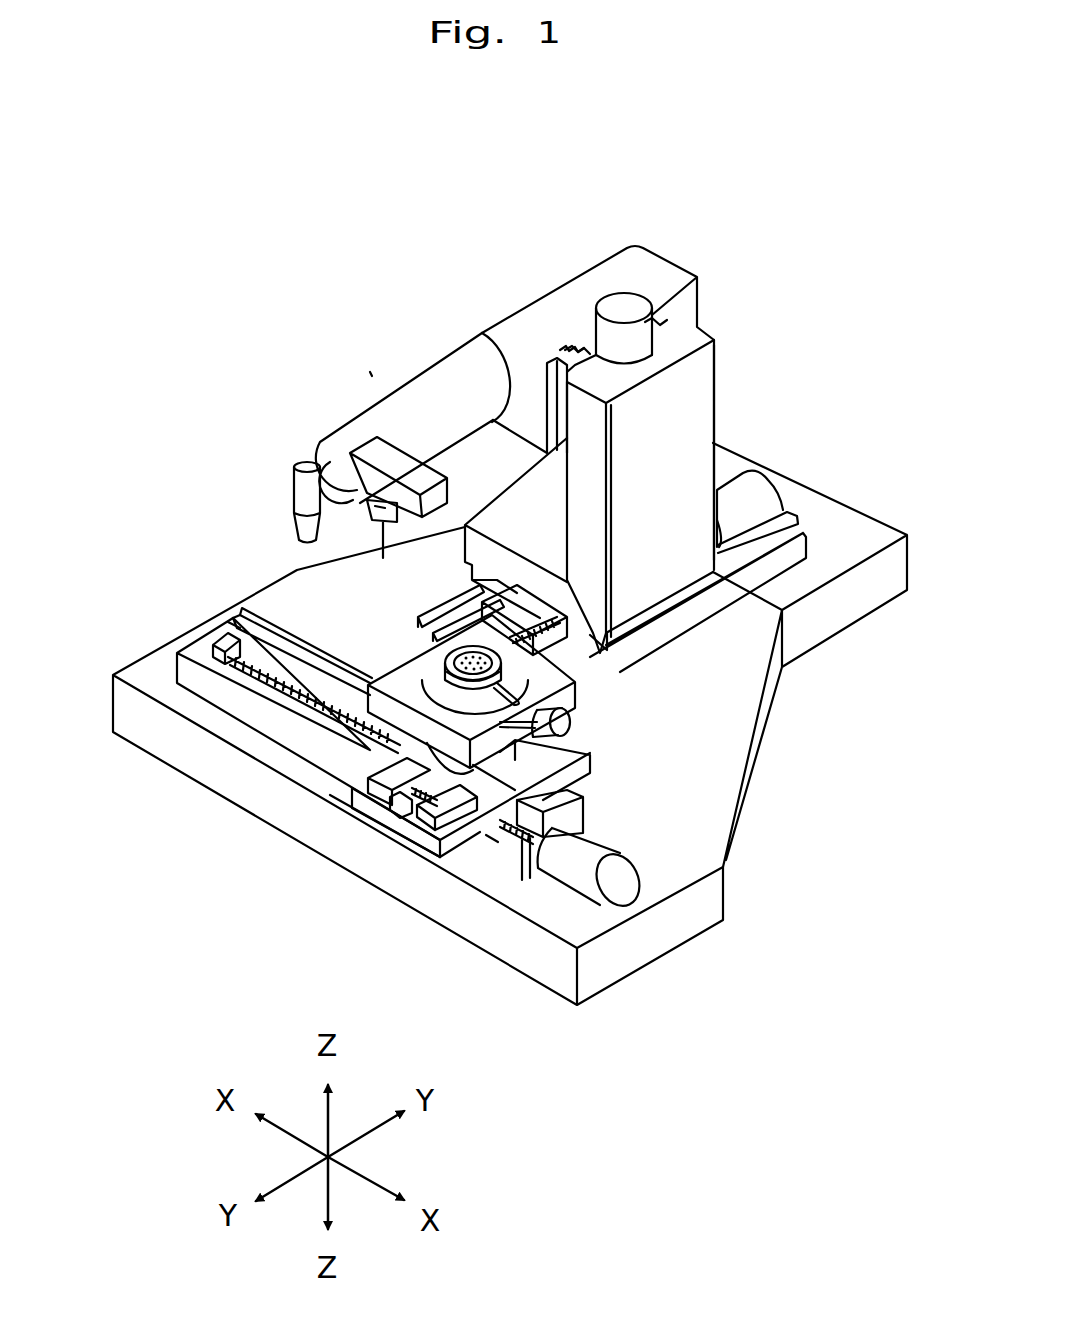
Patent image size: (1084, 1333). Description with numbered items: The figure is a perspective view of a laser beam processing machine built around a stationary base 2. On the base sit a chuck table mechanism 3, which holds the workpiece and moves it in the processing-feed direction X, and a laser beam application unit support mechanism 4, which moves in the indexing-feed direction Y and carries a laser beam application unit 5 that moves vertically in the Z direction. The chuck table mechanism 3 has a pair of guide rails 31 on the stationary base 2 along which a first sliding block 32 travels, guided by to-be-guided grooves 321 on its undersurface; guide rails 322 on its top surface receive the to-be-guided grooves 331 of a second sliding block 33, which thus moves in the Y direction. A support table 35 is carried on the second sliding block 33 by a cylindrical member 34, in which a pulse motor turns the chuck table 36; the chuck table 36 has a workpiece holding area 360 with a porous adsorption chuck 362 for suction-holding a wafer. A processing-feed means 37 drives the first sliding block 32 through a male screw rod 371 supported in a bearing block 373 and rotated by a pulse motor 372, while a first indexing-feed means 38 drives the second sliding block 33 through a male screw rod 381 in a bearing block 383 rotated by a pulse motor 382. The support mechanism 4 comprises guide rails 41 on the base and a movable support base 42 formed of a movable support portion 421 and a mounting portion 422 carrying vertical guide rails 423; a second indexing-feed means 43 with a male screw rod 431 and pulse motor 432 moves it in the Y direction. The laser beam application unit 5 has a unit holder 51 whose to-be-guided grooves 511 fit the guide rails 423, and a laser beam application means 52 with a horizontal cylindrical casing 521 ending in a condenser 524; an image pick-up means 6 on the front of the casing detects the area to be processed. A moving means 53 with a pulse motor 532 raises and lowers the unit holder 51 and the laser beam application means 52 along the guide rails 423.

The stationary base 2 is at (822, 778).
The chuck table mechanism 3 is at (685, 800).
The laser beam application unit support mechanism 4 is at (822, 557).
The laser beam application unit 5 is at (370, 375).
The image pick-up means 6 is at (380, 552).
The guide rails 31 is at (252, 618).
The first sliding block 32 is at (425, 835).
The second sliding block 33 is at (560, 727).
The cylindrical member 34 is at (492, 840).
The support table 35 is at (503, 663).
The chuck table 36 is at (425, 680).
The processing-feed means 37 is at (535, 897).
The first indexing-feed means 38 is at (573, 735).
The guide rails 41 is at (455, 612).
The movable support base 42 is at (715, 428).
The second indexing-feed means 43 is at (788, 503).
The unit holder 51 is at (580, 287).
The laser beam application means 52 is at (417, 378).
The moving means 53 is at (617, 290).
The to-be-guided grooves 321 is at (613, 793).
The guide rails 322 is at (380, 777).
The to-be-guided grooves 331 is at (367, 740).
The workpiece holding area 360 is at (507, 641).
The adsorption chuck 362 is at (422, 655).
The male screw rod 371 is at (247, 686).
The pulse motor 372 is at (610, 902).
The bearing block 373 is at (235, 625).
The male screw rod 381 is at (370, 740).
The pulse motor 382 is at (575, 737).
The bearing block 383 is at (392, 805).
The movable support portion 421 is at (490, 527).
The mounting portion 422 is at (715, 382).
The guide rails 423 is at (573, 353).
The male screw rod 431 is at (530, 603).
The pulse motor 432 is at (757, 483).
The to-be-guided grooves 511 is at (572, 357).
The cylindrical casing 521 is at (363, 430).
The condenser 524 is at (293, 493).
The pulse motor 532 is at (630, 307).